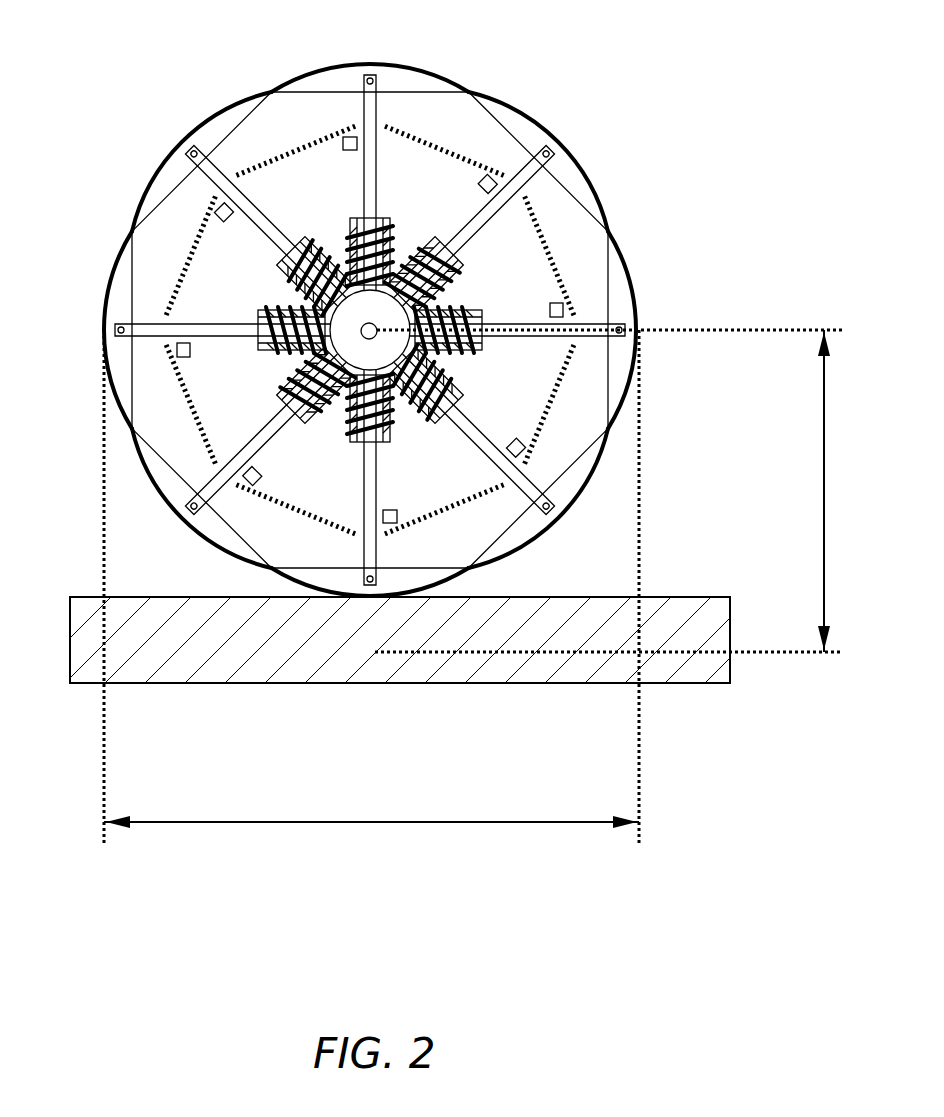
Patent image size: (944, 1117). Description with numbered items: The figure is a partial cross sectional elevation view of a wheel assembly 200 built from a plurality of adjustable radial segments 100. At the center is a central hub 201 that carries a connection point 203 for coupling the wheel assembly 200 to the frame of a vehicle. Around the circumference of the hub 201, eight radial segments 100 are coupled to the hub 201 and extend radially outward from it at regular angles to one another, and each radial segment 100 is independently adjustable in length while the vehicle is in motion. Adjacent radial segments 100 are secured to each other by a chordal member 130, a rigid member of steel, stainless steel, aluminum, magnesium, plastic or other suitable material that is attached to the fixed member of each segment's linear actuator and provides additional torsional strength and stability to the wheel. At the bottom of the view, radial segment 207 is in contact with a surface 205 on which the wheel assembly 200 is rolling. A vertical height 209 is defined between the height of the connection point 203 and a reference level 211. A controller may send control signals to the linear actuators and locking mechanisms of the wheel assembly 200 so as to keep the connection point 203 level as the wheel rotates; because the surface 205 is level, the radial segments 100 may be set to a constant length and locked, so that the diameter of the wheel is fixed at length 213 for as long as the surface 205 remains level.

The radial segment 100 is at (374, 54).
The chordal member 130 is at (282, 150).
The wheel assembly 200 is at (728, 86).
The central hub 201 is at (374, 308).
The connection point 203 is at (375, 328).
The surface 205 is at (241, 597).
The radial segment 207 is at (398, 566).
The vertical height 209 is at (822, 473).
The reference level 211 is at (808, 656).
The length 213 is at (390, 825).